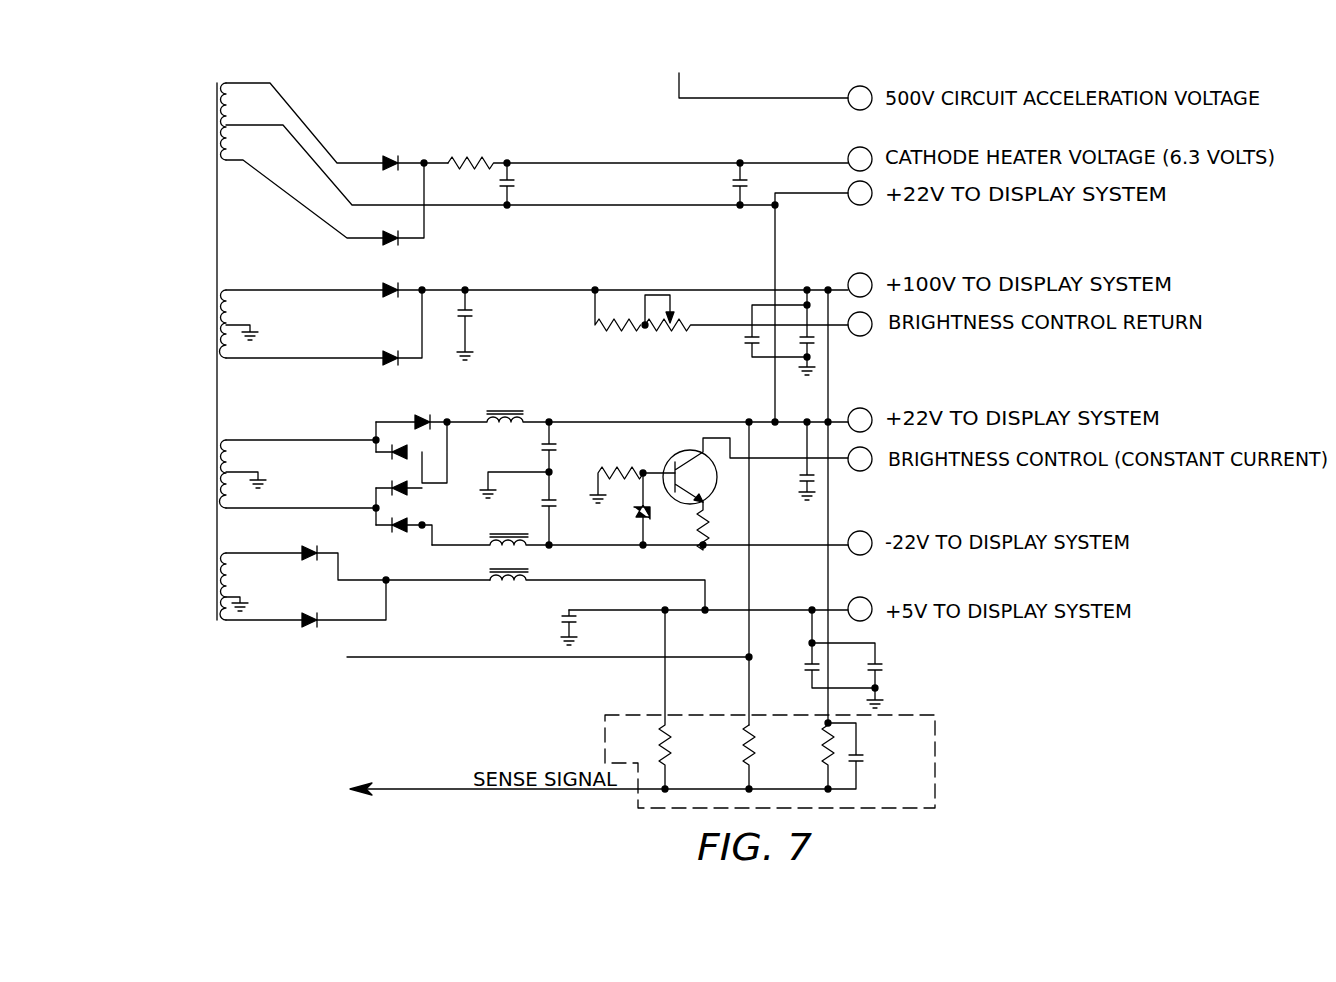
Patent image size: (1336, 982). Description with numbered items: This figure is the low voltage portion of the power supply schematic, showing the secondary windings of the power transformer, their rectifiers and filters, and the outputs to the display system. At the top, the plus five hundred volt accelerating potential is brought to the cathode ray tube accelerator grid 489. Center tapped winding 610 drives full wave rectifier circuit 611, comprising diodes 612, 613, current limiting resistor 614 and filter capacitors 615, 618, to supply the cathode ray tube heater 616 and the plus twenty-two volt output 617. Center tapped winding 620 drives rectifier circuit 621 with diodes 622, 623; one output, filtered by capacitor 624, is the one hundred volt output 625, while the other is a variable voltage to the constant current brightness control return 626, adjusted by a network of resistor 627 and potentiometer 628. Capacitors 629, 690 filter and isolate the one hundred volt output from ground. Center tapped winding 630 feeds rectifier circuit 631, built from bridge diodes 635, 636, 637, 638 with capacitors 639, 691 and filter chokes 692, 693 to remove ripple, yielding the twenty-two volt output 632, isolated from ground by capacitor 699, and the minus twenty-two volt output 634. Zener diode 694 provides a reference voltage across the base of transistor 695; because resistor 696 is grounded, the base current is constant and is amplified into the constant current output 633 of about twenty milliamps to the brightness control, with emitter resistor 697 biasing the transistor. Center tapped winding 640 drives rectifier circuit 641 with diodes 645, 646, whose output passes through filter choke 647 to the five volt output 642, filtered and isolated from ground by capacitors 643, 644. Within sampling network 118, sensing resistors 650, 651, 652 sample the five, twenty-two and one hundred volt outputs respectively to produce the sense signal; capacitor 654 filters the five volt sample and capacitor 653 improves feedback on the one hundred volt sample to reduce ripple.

The sampling network 118 is at (935, 736).
The cathode ray tube accelerator grid 489 is at (870, 90).
The winding 610 is at (232, 138).
The full wave rectifier circuit 611 is at (409, 192).
The diode 612 is at (395, 158).
The diode 613 is at (405, 240).
The current limiting resistor 614 is at (468, 158).
The filter capacitor 615 is at (515, 183).
The cathode ray tube heater 616 is at (870, 151).
The +22 volt output to display elements 617 is at (871, 201).
The filter capacitor 618 is at (735, 183).
The winding 620 is at (232, 300).
The full wave rectifier circuit 621 is at (403, 322).
The diode 622 is at (394, 285).
The diode 623 is at (393, 363).
The capacitor 624 is at (470, 315).
The 100 volt output 625 is at (870, 277).
The constant current brightness control return 626 is at (871, 331).
The resistor 627 is at (612, 333).
The potentiometer 628 is at (668, 333).
The capacitor 629 is at (752, 339).
The capacitor 690 is at (800, 345).
The winding 630 is at (232, 450).
The full wave rectifier circuit 631 is at (428, 453).
The diode 635 is at (428, 415).
The diode 636 is at (390, 457).
The diode 637 is at (410, 495).
The diode 638 is at (400, 535).
The filter choke 692 is at (503, 412).
The filter choke 693 is at (512, 534).
The capacitor 639 is at (557, 449).
The capacitor 691 is at (557, 500).
The transistor 695 is at (690, 450).
The resistor 696 is at (625, 470).
The zener diode 694 is at (636, 512).
The emitter resistor 697 is at (698, 522).
The capacitor 699 is at (800, 477).
The 22 volt output 632 is at (870, 412).
The constant current output to brightness control circuitry 633 is at (871, 467).
The −22 volt output 634 is at (870, 535).
The winding 640 is at (232, 560).
The full wave rectifier circuit 641 is at (328, 579).
The diode 645 is at (312, 547).
The diode 646 is at (320, 607).
The filter choke 647 is at (503, 590).
The capacitor 654 is at (560, 620).
The 5 volt output 642 is at (870, 601).
The capacitor 644 is at (808, 666).
The capacitor 643 is at (885, 668).
The sensing resistor 650 is at (662, 744).
The sensing resistor 651 is at (747, 744).
The sensing resistor 652 is at (825, 744).
The capacitor 653 is at (862, 760).